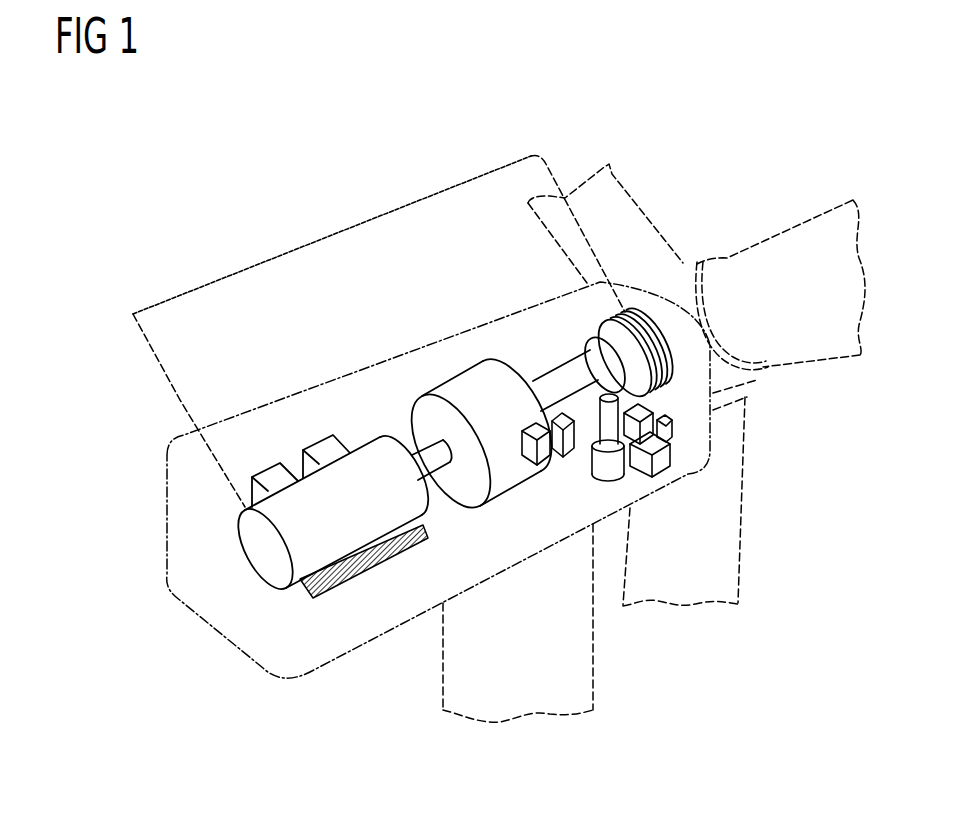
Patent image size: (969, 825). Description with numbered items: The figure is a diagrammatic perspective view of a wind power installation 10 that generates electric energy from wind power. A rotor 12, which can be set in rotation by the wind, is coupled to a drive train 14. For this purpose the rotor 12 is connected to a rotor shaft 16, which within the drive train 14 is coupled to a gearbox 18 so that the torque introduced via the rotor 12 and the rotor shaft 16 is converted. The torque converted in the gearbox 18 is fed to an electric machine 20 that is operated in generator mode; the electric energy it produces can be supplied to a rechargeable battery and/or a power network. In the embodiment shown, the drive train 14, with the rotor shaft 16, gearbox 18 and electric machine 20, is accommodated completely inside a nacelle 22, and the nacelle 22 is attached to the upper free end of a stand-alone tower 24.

The wind power installation 10 is at (209, 171).
The rotor 12 is at (727, 560).
The drive train 14 is at (343, 229).
The rotor shaft 16 is at (558, 387).
The gearbox 18 is at (468, 390).
The electric machine 20 is at (375, 458).
The nacelle 22 is at (230, 640).
The tower 24 is at (568, 673).